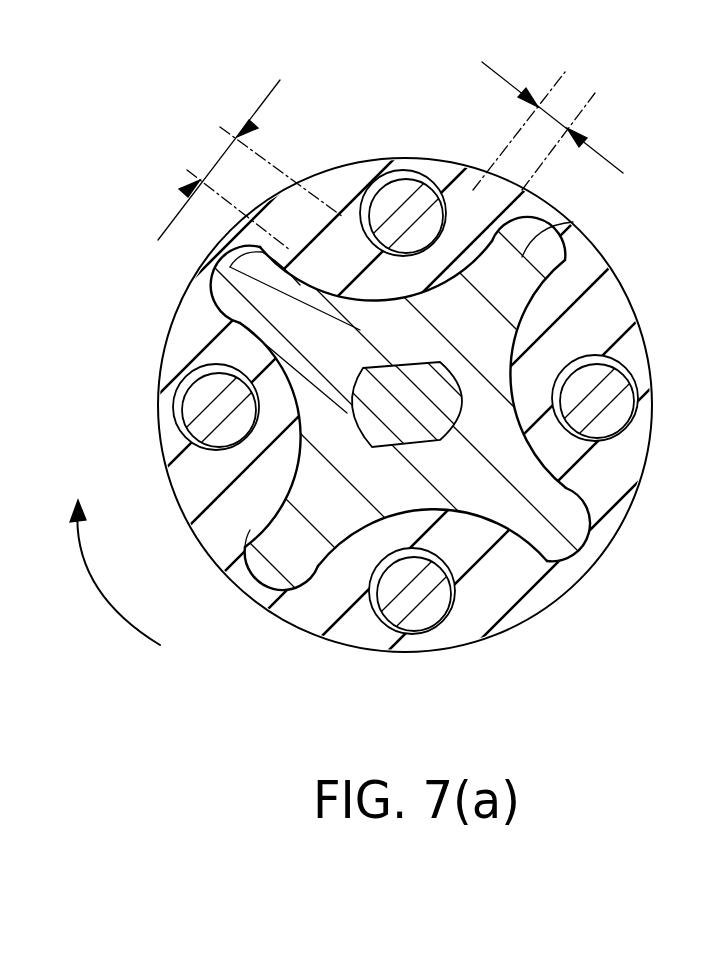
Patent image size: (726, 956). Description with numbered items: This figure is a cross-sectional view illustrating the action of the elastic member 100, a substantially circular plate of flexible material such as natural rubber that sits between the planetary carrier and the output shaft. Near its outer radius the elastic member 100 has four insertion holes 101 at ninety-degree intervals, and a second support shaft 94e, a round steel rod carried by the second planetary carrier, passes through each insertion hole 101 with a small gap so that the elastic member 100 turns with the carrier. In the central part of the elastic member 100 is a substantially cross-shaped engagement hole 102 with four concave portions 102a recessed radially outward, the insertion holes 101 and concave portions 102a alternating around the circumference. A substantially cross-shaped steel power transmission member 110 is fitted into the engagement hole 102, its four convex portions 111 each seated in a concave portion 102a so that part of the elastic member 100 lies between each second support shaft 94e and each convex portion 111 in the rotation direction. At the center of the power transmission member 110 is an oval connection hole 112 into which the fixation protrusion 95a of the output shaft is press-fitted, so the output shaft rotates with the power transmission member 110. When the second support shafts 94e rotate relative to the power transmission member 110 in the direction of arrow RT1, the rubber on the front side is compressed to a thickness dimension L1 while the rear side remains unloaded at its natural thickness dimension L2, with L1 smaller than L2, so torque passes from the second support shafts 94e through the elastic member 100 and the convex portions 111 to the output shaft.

The elastic member 100 is at (360, 630).
The insertion hole 101 is at (383, 234).
The engagement hole 102 is at (575, 520).
The concave portion 102a is at (238, 320).
The power transmission member 110 is at (420, 345).
The convex portion 111 is at (258, 285).
The connection hole 112 is at (255, 500).
The second support shaft 94e is at (405, 215).
The fixation protrusion 95a is at (432, 419).
The thickness dimension L1 is at (548, 117).
The thickness dimension L2 is at (250, 165).
The arrow RT1 is at (106, 572).